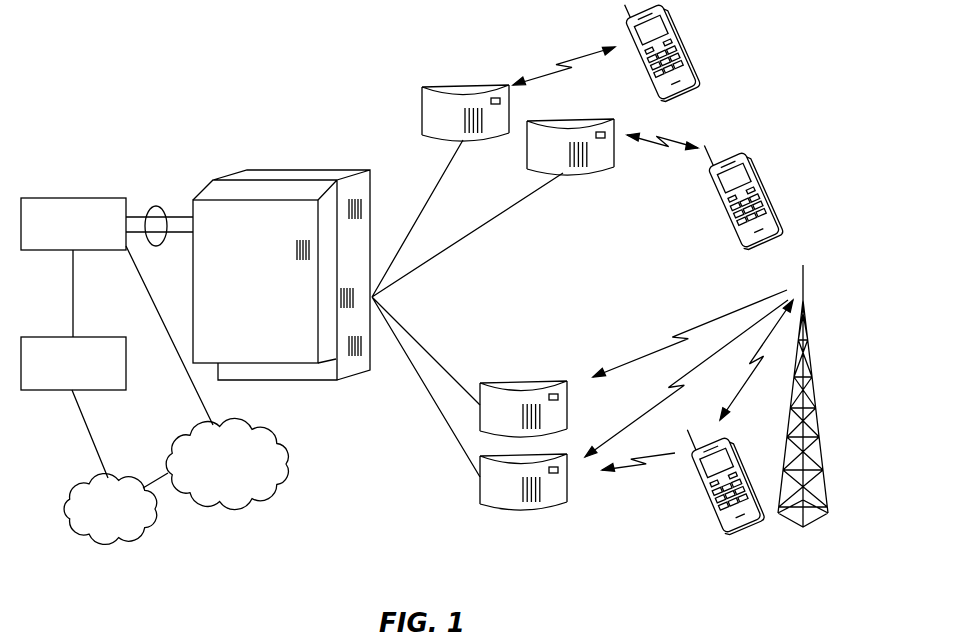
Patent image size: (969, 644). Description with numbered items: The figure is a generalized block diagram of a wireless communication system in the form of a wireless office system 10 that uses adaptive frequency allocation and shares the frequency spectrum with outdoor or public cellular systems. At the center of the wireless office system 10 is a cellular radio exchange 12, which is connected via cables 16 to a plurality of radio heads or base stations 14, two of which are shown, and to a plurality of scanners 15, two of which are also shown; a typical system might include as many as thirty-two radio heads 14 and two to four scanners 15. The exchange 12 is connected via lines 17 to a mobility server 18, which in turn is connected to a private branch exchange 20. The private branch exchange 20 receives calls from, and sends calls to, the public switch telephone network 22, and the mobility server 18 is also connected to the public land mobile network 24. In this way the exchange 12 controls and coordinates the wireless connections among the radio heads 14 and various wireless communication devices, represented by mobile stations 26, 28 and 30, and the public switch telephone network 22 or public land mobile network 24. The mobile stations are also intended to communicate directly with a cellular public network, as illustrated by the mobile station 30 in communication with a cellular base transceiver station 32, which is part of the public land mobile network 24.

The wireless office system 10 is at (292, 131).
The cellular radio exchange 12 is at (220, 208).
The radio heads 14 is at (427, 112).
The scanners 15 is at (546, 382).
The cables 16 is at (437, 183).
The lines 17 is at (157, 206).
The mobility server 18 is at (47, 197).
The private branch exchange 20 is at (44, 390).
The public switch telephone network 22 is at (123, 537).
The public land mobile network 24 is at (277, 497).
The mobile station 26 is at (685, 50).
The mobile station 28 is at (771, 200).
The mobile station 30 is at (715, 518).
The cellular base transceiver station 32 is at (807, 522).